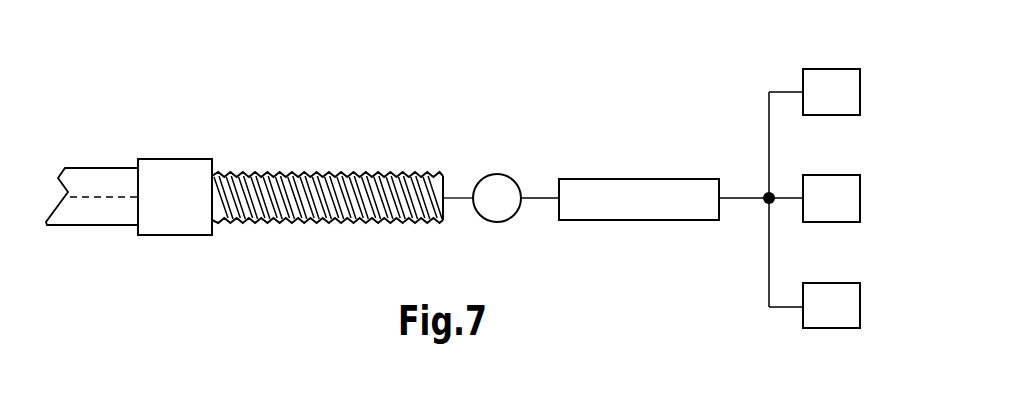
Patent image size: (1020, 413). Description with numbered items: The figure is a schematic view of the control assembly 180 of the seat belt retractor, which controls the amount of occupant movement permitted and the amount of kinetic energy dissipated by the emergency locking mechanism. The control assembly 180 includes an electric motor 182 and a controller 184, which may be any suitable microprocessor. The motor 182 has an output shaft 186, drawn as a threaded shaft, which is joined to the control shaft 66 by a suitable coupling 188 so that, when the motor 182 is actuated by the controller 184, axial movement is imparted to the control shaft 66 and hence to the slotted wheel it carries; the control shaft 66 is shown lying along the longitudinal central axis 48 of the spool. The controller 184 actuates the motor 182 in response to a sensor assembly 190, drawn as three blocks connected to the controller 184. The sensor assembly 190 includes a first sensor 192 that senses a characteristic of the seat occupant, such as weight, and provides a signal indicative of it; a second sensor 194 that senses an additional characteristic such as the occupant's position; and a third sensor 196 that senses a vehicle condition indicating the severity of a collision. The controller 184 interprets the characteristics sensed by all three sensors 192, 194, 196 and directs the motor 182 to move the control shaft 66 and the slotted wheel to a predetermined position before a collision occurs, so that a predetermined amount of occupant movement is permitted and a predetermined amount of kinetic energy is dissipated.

The longitudinal central axis 48 is at (102, 197).
The control shaft 66 is at (123, 168).
The control assembly 180 is at (497, 113).
The electric motor 182 is at (518, 180).
The controller 184 is at (641, 178).
The output shaft 186 is at (359, 175).
The coupling 188 is at (184, 180).
The sensor assembly 190 is at (737, 104).
The first sensor 192 is at (860, 100).
The second sensor 194 is at (860, 208).
The third sensor 196 is at (860, 310).